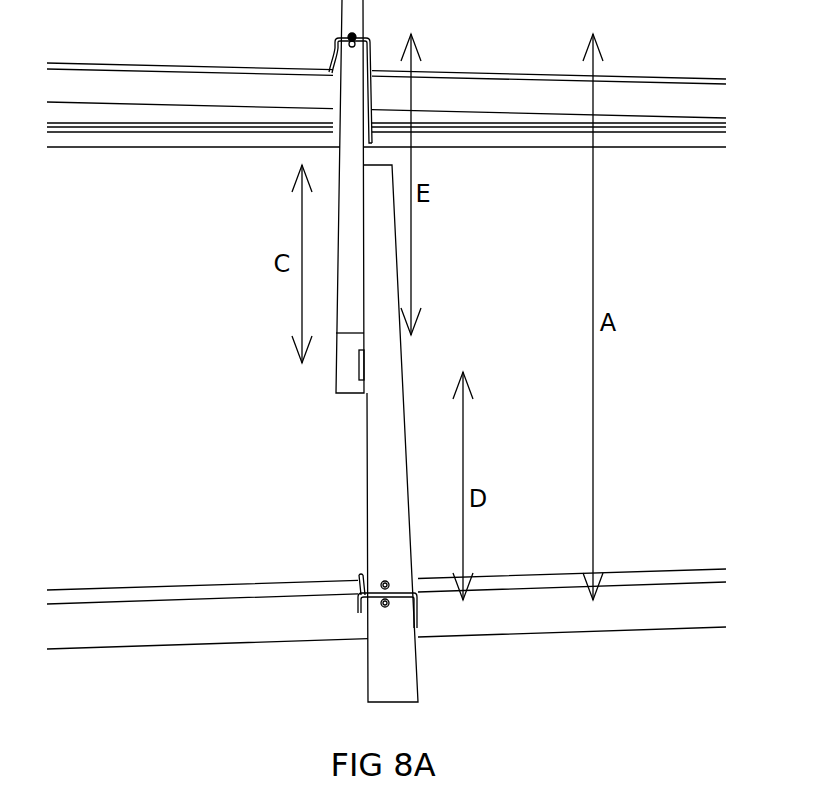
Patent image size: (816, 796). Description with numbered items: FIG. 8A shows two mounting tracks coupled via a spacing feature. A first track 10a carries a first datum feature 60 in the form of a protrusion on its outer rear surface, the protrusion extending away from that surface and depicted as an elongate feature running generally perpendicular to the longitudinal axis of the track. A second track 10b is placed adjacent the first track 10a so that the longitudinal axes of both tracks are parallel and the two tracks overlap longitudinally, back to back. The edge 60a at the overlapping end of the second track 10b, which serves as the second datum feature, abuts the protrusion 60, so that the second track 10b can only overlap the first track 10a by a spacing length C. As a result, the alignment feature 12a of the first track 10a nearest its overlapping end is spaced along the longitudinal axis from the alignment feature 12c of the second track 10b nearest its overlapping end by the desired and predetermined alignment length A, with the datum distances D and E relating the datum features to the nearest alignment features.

The first track 10a is at (360, 528).
The second track 10b is at (319, 385).
The alignment feature 12a is at (352, 622).
The alignment feature 12c is at (323, 50).
The first datum feature 60 is at (362, 380).
The second datum feature 60a is at (348, 327).